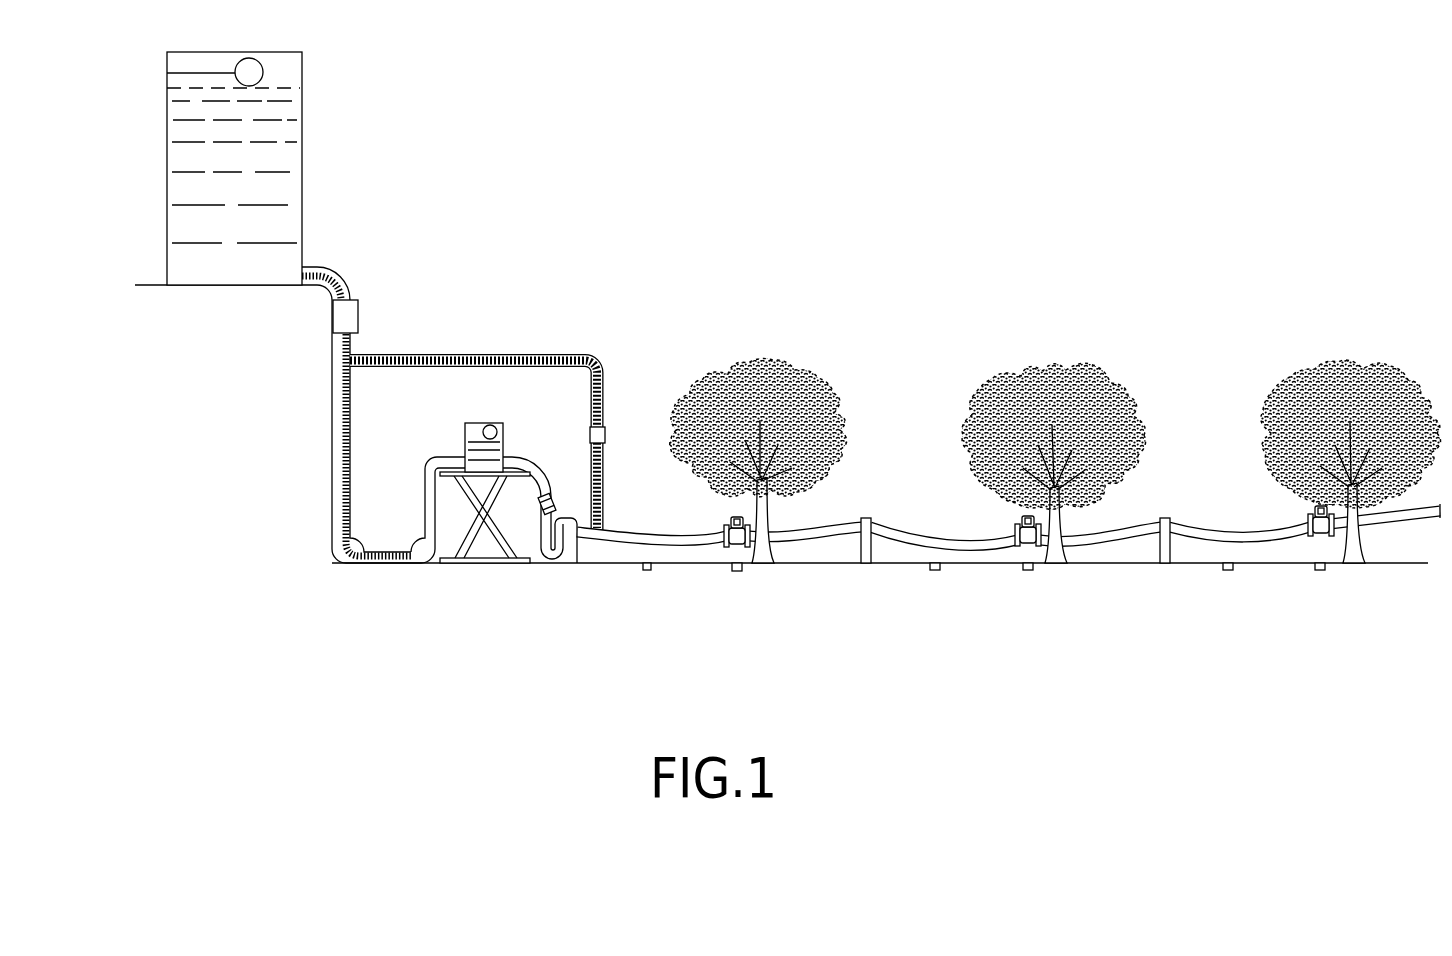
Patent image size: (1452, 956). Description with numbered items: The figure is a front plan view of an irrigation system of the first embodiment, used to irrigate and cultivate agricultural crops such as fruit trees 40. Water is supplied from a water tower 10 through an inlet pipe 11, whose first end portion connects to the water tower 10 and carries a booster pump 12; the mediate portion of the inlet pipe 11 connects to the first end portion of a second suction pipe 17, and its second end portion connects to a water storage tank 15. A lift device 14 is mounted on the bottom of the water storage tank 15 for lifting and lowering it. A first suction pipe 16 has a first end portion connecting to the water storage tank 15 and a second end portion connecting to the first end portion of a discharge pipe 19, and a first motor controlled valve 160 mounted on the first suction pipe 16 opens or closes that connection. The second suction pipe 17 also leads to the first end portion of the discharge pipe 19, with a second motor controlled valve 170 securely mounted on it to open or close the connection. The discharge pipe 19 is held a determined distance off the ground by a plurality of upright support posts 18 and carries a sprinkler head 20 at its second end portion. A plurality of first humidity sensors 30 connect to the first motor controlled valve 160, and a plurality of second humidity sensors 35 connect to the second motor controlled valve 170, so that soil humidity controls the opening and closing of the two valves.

The water tower 10 is at (304, 108).
The inlet pipe 11 is at (345, 408).
The booster pump 12 is at (352, 302).
The lift device 14 is at (483, 535).
The water storage tank 15 is at (486, 426).
The first suction pipe 16 is at (538, 479).
The first motor controlled valve 160 is at (542, 560).
The second suction pipe 17 is at (522, 357).
The second motor controlled valve 170 is at (604, 433).
The upright support post 18 is at (572, 548).
The discharge pipe 19 is at (628, 535).
The sprinkler head 20 is at (730, 513).
The first humidity sensor 30 is at (738, 568).
The second humidity sensor 35 is at (648, 568).
The fruit tree 40 is at (802, 389).